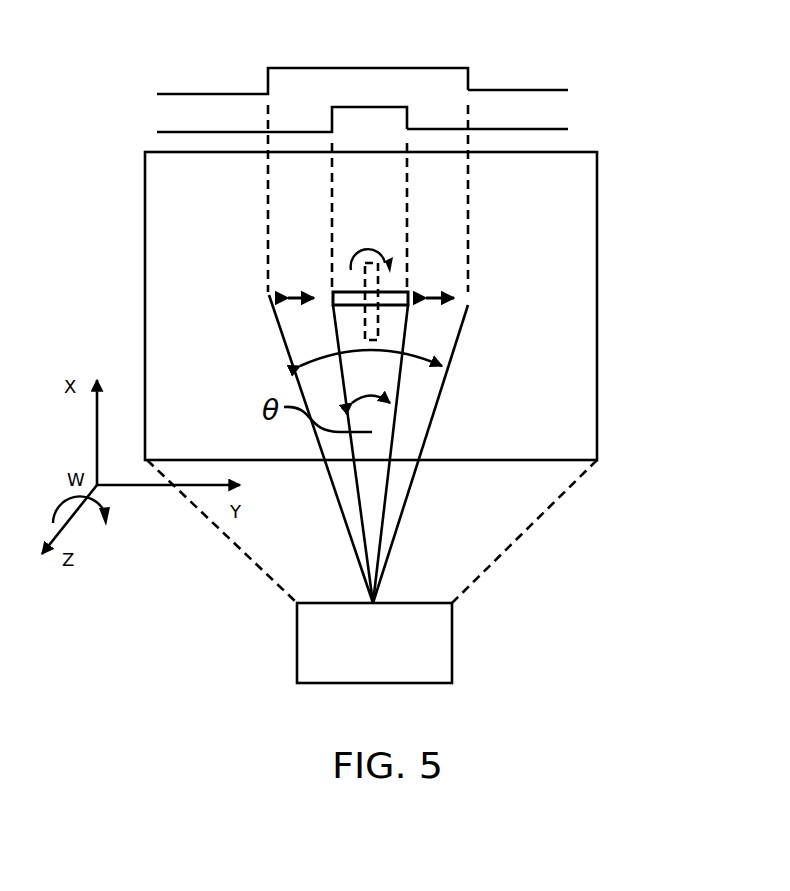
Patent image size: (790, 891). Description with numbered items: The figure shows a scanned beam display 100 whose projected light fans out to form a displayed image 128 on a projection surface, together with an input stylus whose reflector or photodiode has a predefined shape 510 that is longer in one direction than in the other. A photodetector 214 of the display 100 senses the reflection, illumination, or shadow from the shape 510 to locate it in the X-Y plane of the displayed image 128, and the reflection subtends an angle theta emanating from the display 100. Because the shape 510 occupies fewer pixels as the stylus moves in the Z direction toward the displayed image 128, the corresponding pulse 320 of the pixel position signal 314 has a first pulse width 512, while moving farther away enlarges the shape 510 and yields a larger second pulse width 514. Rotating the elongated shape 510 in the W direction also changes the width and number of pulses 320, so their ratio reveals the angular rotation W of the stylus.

The display 100 is at (297, 667).
The displayed image 128 is at (597, 175).
The photodetector 214 is at (297, 620).
The pixel position signal 314 is at (556, 128).
The pulse 320 is at (293, 68).
The shape 510 is at (397, 292).
The first pulse width 512 is at (333, 243).
The second pulse width 514 is at (269, 292).